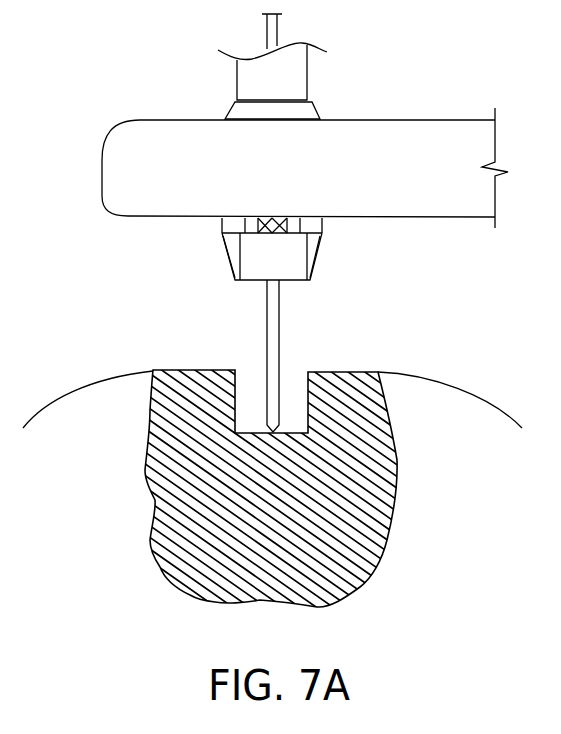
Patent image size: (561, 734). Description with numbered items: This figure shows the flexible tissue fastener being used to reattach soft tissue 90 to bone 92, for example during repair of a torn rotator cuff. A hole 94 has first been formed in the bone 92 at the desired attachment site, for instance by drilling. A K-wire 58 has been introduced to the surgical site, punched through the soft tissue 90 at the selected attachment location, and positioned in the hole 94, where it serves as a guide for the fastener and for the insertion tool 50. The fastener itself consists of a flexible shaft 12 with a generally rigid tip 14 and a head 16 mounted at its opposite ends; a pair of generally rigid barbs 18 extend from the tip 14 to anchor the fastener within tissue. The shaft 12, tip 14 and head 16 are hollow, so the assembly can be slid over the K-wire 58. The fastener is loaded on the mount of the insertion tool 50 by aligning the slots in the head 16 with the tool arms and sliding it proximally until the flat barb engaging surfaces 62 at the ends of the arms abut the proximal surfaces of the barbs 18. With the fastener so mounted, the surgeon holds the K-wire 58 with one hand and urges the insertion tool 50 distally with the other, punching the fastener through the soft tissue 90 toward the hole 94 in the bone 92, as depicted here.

The flexible shaft 12 is at (282, 222).
The tip 14 is at (250, 283).
The head 16 is at (320, 117).
The barbs 18 is at (228, 246).
The insertion tool 50 is at (307, 78).
The K-wire 58 is at (278, 33).
The barb engaging surfaces 62 is at (322, 220).
The soft tissue 90 is at (155, 120).
The bone 92 is at (137, 370).
The hole 94 is at (292, 383).